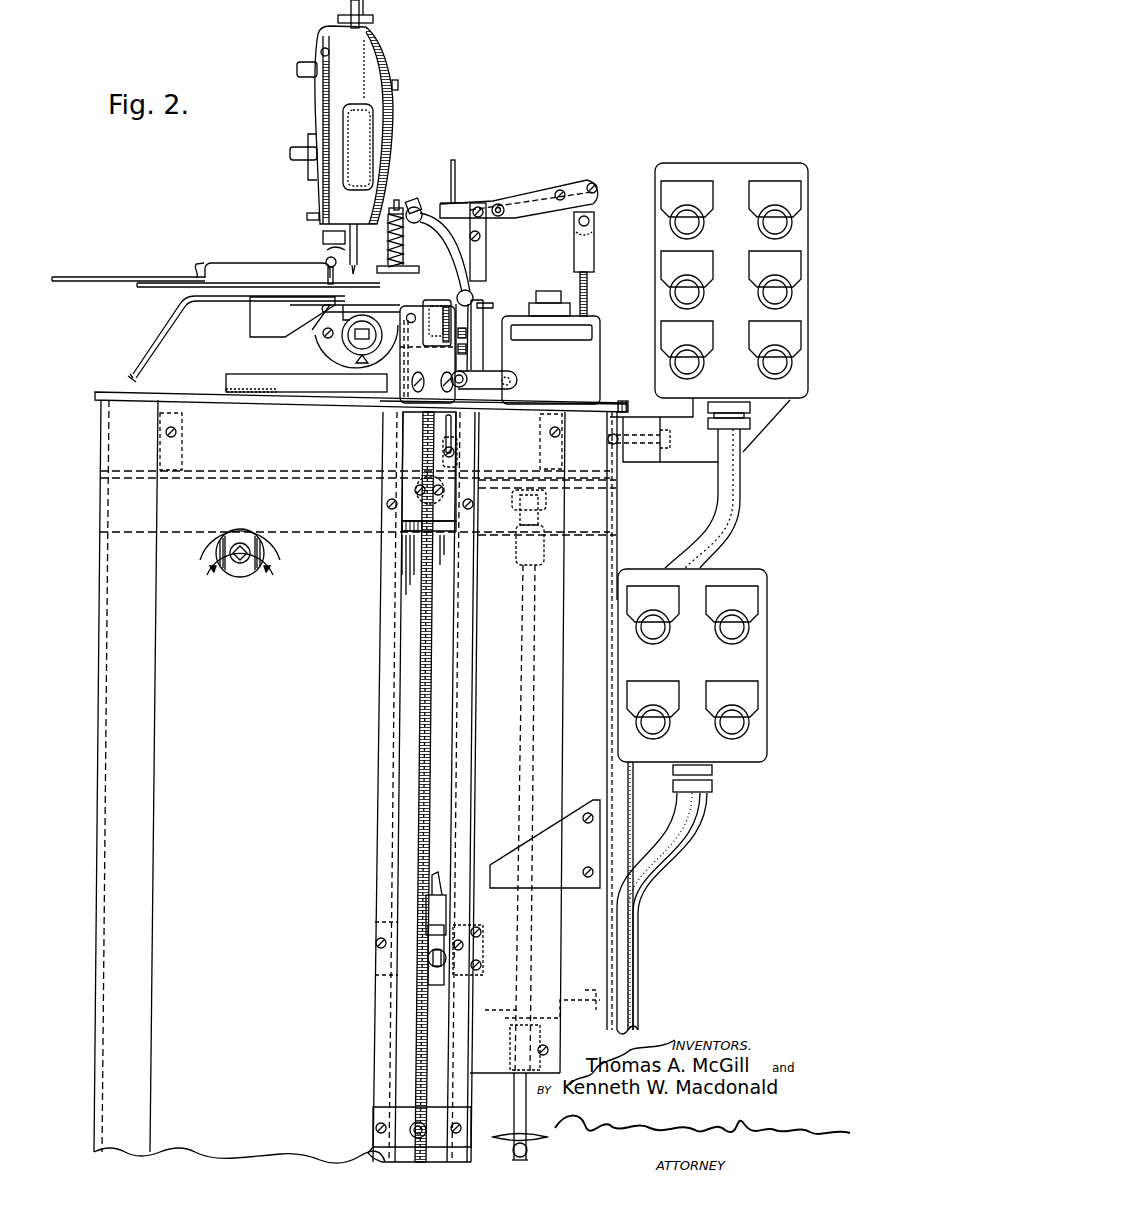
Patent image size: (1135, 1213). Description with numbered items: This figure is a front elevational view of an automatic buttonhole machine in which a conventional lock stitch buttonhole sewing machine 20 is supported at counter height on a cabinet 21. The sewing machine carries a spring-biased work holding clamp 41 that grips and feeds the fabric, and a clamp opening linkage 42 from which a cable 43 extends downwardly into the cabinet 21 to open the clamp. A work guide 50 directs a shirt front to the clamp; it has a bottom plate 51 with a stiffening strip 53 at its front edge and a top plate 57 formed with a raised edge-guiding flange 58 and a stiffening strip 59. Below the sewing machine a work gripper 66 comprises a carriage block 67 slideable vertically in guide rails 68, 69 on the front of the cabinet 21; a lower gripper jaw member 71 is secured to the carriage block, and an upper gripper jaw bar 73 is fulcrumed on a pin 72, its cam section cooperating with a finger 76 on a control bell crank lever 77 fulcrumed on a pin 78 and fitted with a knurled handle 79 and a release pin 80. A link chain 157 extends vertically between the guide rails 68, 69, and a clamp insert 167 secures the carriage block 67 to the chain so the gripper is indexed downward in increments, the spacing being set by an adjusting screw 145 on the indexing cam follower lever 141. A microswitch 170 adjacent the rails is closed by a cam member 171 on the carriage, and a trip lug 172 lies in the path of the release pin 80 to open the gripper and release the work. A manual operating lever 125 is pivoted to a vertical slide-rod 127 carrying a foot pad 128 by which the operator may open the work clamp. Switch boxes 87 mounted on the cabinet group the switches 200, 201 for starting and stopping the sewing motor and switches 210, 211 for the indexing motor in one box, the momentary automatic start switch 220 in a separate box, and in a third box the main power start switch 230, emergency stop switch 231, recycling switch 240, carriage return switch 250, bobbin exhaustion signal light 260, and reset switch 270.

The lock stitch buttonhole sewing machine 20 is at (396, 100).
The cabinet 21 is at (98, 458).
The work holding clamp 41 is at (326, 259).
The clamp opening linkage 42 is at (514, 194).
The cable 43 is at (590, 285).
The work guide 50 is at (258, 262).
The bottom plate 51 is at (142, 349).
The stiffening strip 53 is at (192, 303).
The top plate 57 is at (94, 276).
The edge-guiding flange 58 is at (199, 263).
The stiffening strip 59 is at (148, 288).
The work gripper 66 is at (328, 322).
The carriage block 67 is at (412, 432).
The guide rail 68 is at (472, 700).
The guide rail 69 is at (387, 650).
The lower gripper jaw member 71 is at (412, 360).
The pin 72 is at (408, 325).
The upper gripper jaw bar 73 is at (414, 297).
The finger 76 is at (470, 322).
The control bell crank lever 77 is at (498, 376).
The pin 78 is at (463, 386).
The knurled handle 79 is at (476, 291).
The release pin 80 is at (511, 382).
The switch boxes 87 is at (600, 377).
The manual operating lever 125 is at (540, 530).
The vertical slide-rod 127 is at (545, 636).
The foot pad 128 is at (510, 1132).
The indexing cam follower lever 141 is at (232, 568).
The adjusting screw 145 is at (245, 562).
The link chain 157 is at (424, 717).
The clamp insert 167 is at (388, 504).
The microswitch 170 is at (440, 965).
The cam member 171 is at (458, 435).
The trip lug 172 is at (510, 862).
The switch 200 is at (660, 634).
The switch 201 is at (740, 634).
The switch 210 is at (660, 728).
The switch 211 is at (740, 732).
The automatic start switch 220 is at (546, 290).
The main power start switch 230 is at (680, 226).
The emergency stop switch 231 is at (770, 226).
The momentary contact switch 240 is at (682, 296).
The momentary contact switch 250 is at (680, 360).
The signal light 260 is at (768, 368).
The momentary contact switch 270 is at (768, 298).